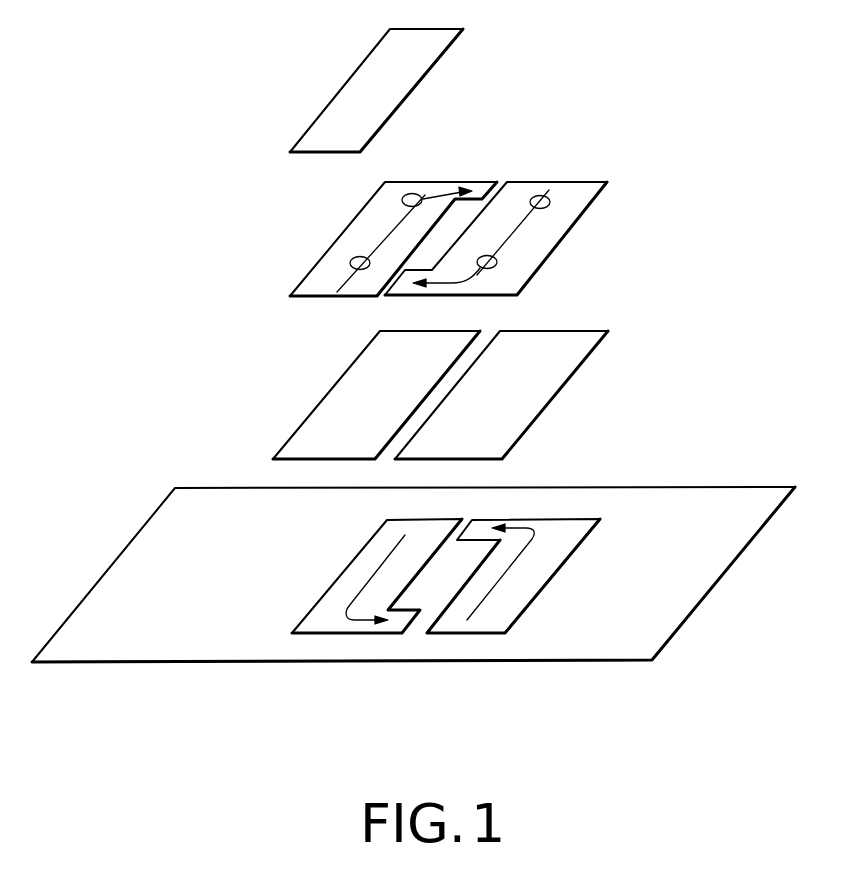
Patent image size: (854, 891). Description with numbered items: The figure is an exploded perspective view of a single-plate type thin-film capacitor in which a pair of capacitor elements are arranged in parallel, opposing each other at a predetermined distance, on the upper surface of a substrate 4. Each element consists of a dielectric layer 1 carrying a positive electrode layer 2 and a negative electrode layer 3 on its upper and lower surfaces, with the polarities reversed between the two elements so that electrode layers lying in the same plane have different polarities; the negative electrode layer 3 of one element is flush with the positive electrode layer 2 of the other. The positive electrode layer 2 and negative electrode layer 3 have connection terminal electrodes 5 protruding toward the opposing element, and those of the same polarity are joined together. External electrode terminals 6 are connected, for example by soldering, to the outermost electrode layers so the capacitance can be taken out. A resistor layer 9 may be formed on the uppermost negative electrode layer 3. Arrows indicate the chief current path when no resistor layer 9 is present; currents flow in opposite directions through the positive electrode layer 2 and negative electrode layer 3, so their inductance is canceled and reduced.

The dielectric layer 1 is at (342, 391).
The positive electrode layer 2 is at (583, 198).
The negative electrode layer 3 is at (352, 230).
The substrate 4 is at (758, 520).
The connection terminal electrodes 5 is at (478, 186).
The external electrode terminals 6 is at (497, 263).
The resistor layer 9 is at (335, 104).